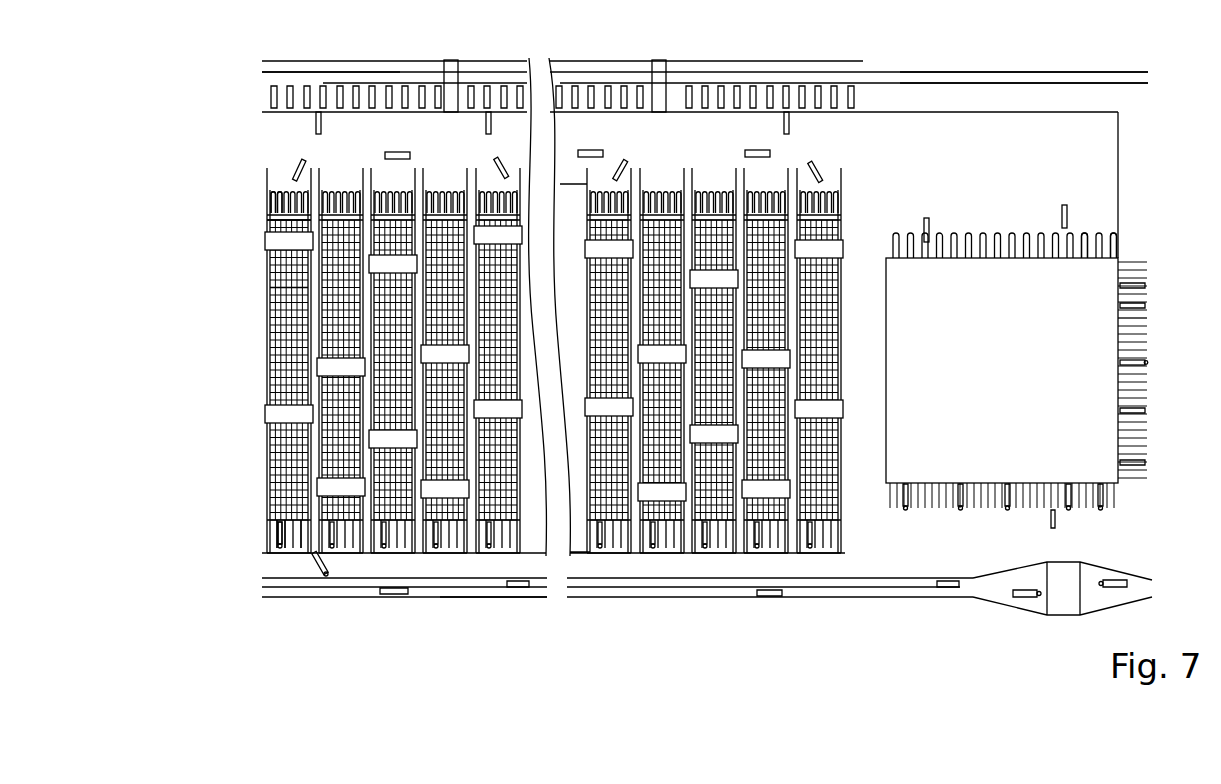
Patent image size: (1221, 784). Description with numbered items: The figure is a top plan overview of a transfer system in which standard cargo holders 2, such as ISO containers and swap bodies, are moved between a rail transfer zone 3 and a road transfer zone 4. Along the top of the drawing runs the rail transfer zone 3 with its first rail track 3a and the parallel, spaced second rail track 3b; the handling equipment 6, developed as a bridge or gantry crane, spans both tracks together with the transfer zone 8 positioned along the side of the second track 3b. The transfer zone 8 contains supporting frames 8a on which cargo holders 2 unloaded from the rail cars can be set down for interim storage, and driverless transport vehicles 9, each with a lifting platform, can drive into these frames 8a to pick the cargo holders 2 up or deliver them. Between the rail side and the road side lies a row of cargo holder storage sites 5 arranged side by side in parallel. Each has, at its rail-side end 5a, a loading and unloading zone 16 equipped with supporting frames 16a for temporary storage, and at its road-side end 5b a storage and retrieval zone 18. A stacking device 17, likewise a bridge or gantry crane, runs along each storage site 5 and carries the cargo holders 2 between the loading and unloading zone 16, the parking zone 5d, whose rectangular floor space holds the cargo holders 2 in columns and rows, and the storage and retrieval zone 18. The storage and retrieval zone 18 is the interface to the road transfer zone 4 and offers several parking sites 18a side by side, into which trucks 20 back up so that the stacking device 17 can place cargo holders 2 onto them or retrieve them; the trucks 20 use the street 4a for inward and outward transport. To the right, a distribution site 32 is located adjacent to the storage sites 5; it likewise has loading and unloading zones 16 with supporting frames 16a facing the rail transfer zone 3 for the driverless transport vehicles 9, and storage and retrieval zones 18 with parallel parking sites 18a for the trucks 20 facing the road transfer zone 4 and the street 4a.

The standard cargo holder 2 is at (272, 288).
The rail transfer zone 3 is at (290, 75).
The first rail track 3a is at (965, 72).
The second rail track 3b is at (1036, 83).
The road transfer zone 4 is at (258, 563).
The street 4a is at (478, 593).
The cargo holder storage site 5 is at (268, 438).
The rail-side end 5a is at (268, 225).
The road-side end 5b is at (268, 522).
The parking zone 5d is at (854, 513).
The handling equipment 6 is at (659, 76).
The transfer zone 8 is at (246, 92).
The supporting frame 8a is at (856, 92).
The driverless transport vehicle 9 is at (292, 172).
The loading and unloading zone 16 is at (272, 205).
The supporting frame 16a is at (268, 212).
The stacking device 17 is at (272, 408).
The storage and retrieval zone 18 is at (274, 536).
The parking site 18a is at (286, 530).
The truck 20 is at (326, 572).
The distribution site 32 is at (1050, 430).